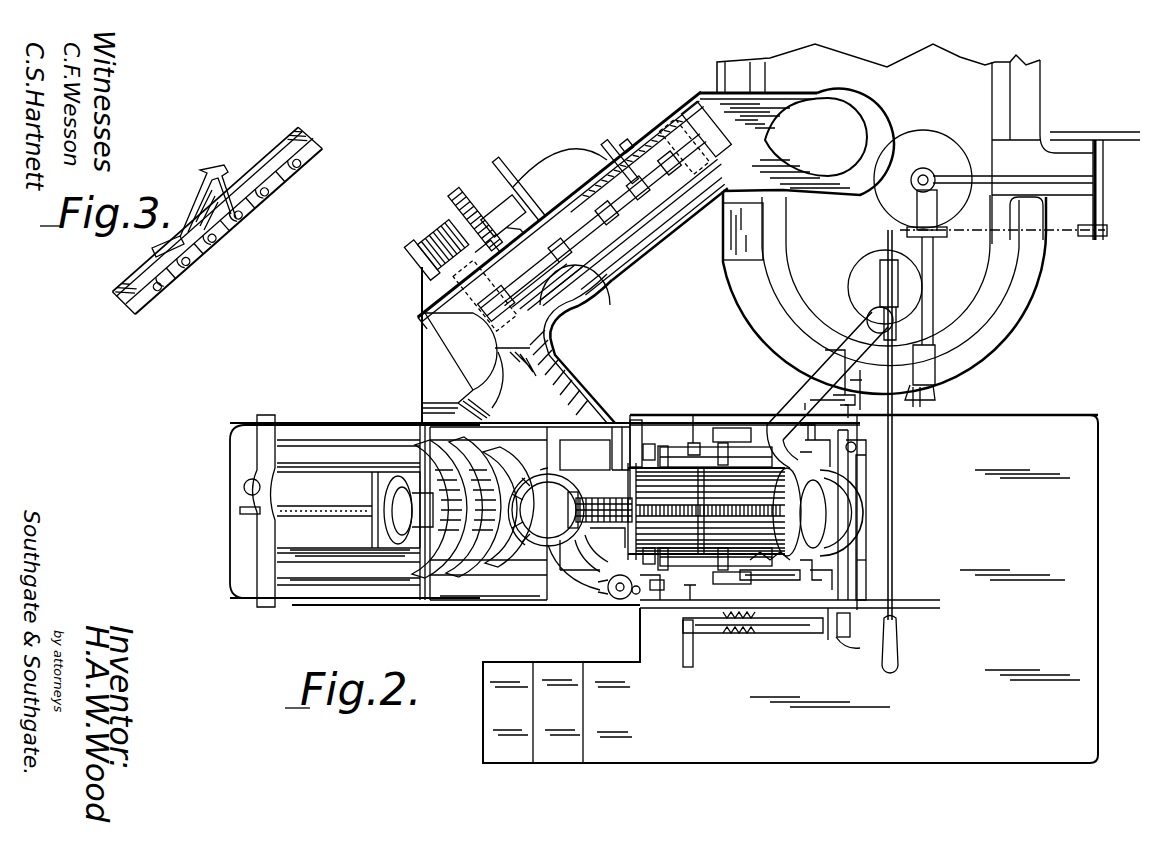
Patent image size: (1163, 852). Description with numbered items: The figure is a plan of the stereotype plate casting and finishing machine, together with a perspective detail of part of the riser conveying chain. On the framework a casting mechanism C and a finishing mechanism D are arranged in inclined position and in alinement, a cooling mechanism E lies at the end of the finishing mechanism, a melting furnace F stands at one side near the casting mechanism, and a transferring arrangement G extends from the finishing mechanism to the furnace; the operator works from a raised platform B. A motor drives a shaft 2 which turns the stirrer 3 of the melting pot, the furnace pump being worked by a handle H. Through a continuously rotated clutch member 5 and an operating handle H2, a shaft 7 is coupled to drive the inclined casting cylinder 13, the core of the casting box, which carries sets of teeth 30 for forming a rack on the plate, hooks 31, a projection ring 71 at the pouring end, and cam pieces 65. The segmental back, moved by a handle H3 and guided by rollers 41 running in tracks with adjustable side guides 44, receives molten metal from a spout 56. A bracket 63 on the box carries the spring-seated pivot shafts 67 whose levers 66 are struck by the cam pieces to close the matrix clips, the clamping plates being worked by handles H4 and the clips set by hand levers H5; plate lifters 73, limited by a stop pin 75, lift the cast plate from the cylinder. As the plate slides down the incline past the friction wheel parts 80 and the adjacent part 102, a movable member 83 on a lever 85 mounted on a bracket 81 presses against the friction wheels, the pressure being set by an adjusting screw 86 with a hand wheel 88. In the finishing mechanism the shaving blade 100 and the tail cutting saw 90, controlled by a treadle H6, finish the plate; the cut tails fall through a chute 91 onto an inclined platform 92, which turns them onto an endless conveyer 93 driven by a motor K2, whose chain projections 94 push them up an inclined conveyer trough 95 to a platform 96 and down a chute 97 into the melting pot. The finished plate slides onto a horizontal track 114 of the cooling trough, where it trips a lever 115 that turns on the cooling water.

In FIG. 2, the shaft 2 is at (930, 272).
In FIG. 2, the stirrer 3 is at (928, 136).
In FIG. 2, the clutch member 5 is at (852, 458).
In FIG. 2, the shaft 7 is at (882, 640).
In FIG. 2, the casting cylinder 13 is at (760, 476).
In FIG. 2, the sets of teeth 30 is at (706, 511).
In FIG. 2, the hooks 31 is at (716, 506).
In FIG. 2, the rollers 41 is at (735, 428).
In FIG. 2, the adjustable side guides 44 is at (693, 412).
In FIG. 2, the spout 56 is at (806, 386).
In FIG. 2, the bracket 63 is at (648, 420).
In FIG. 2, the cam pieces 65 is at (800, 470).
In FIG. 2, the levers 66 is at (828, 568).
In FIG. 2, the spring-seated pivot shafts 67 is at (780, 580).
In FIG. 2, the projection ring 71 is at (790, 512).
In FIG. 2, the plate lifters 73 is at (691, 506).
In FIG. 2, the stop pin 75 is at (652, 516).
In FIG. 2, the collar 80 is at (588, 500).
In FIG. 2, the bracket 81 is at (600, 498).
In FIG. 2, the movable member 83 is at (548, 510).
In FIG. 2, the lever 85 is at (615, 550).
In FIG. 2, the adjusting screw 86 is at (634, 600).
In FIG. 2, the hand wheel 88 is at (612, 598).
In FIG. 2, the tail cutting saw 90 is at (556, 492).
In FIG. 2, the chute 91 is at (575, 402).
In FIG. 2, the inclined platform 92 is at (465, 355).
In FIG. 3, the endless conveyer 93 is at (272, 196).
In FIG. 2, the endless conveyer 93 is at (644, 196).
In FIG. 3, the projections 94 is at (210, 170).
In FIG. 2, the inclined conveyer trough 95 is at (616, 158).
In FIG. 2, the platform 96 is at (768, 100).
In FIG. 2, the chute 97 is at (835, 142).
In FIG. 2, the shaving blade 100 is at (520, 552).
In FIG. 2, the bracket 102 is at (560, 490).
In FIG. 2, the horizontal track 114 is at (318, 474).
In FIG. 2, the lever 115 is at (260, 468).
In FIG. 2, the platform B is at (1040, 422).
In FIG. 2, the casting mechanism C is at (745, 447).
In FIG. 2, the finishing mechanism D is at (505, 445).
In FIG. 2, the cooling mechanism E is at (335, 522).
In FIG. 2, the melting furnace F is at (800, 255).
In FIG. 2, the transferring arrangement G is at (640, 272).
In FIG. 2, the motor K2 is at (532, 150).
In FIG. 2, the handle H is at (900, 640).
In FIG. 2, the operating handle H2 is at (868, 588).
In FIG. 2, the handle H3 is at (692, 652).
In FIG. 2, the handles H4 is at (835, 638).
In FIG. 2, the hand levers H5 is at (848, 622).
In FIG. 2, the treadle H6 is at (740, 630).